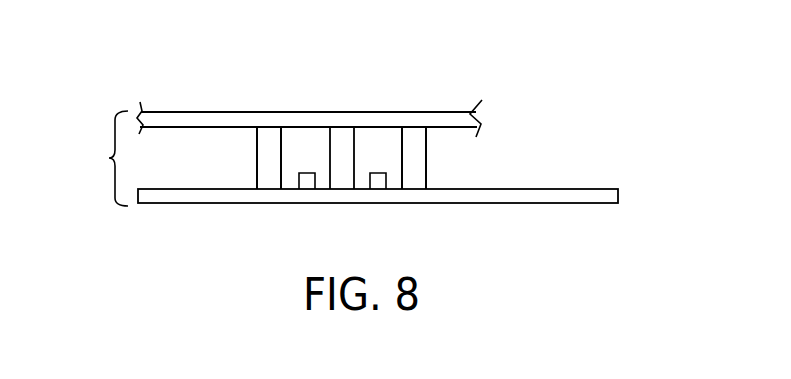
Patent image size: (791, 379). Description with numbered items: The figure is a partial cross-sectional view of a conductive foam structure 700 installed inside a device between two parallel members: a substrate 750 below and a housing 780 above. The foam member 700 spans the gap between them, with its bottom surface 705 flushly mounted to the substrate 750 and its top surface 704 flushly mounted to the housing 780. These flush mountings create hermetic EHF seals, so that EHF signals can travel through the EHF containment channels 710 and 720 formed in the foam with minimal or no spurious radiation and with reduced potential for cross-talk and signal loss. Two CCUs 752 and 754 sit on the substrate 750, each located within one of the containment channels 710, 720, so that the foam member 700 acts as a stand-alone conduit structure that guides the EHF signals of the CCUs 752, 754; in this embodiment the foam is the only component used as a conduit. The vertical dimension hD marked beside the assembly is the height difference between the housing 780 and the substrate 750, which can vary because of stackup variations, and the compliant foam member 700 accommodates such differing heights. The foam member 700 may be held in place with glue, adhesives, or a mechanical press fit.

The foam structure 700 is at (426, 160).
The top surface 704 is at (265, 128).
The bottom surface 705 is at (266, 189).
The EHF containment channel 710 is at (312, 138).
The EHF containment channel 720 is at (376, 140).
The substrate 750 is at (618, 192).
The CCU 752 is at (317, 177).
The CCU 754 is at (387, 177).
The housing 780 is at (472, 112).
The height difference hD is at (102, 158).